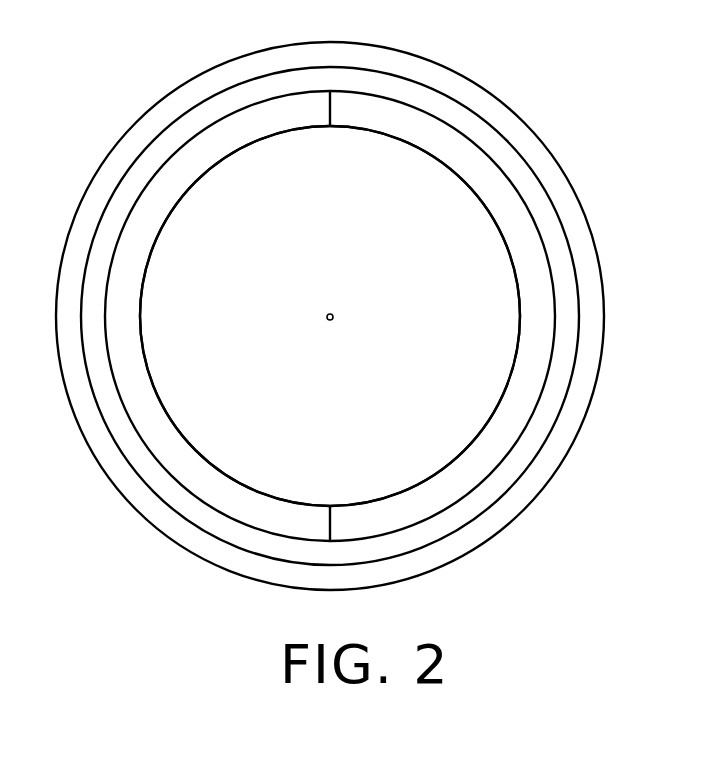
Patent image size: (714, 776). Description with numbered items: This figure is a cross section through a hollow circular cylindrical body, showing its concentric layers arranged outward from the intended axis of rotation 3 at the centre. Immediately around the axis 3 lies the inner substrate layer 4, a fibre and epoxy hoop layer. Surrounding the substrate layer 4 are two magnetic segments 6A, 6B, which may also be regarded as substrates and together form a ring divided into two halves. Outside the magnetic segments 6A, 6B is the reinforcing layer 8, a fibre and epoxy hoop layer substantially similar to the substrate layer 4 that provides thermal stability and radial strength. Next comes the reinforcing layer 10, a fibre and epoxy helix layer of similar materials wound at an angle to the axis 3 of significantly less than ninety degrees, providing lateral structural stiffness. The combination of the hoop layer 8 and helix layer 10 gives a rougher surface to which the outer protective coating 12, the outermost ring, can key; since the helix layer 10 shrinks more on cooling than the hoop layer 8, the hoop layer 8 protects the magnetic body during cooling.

The outer protective coating 12 is at (523, 122).
The reinforcing layer 10 is at (547, 168).
The reinforcing layer 8 is at (560, 245).
The inner substrate layer 4 is at (403, 142).
The magnetic segment 6A is at (147, 413).
The magnetic segment 6B is at (512, 420).
The axis of rotation 3 is at (323, 310).